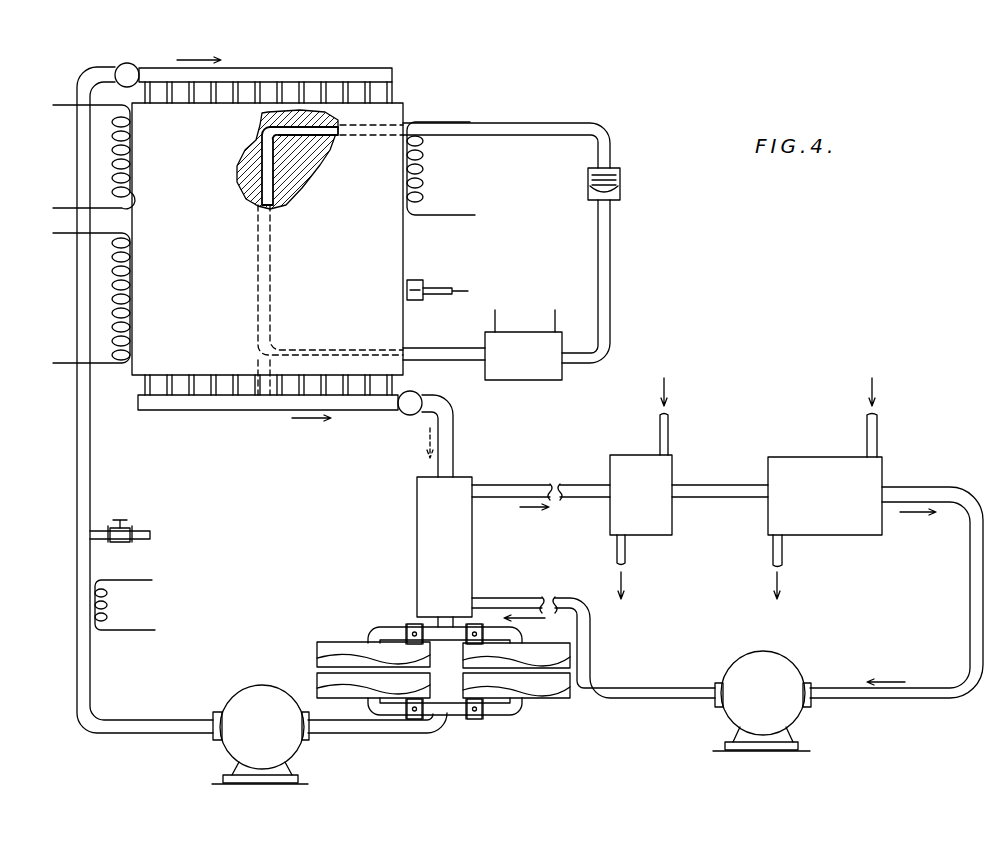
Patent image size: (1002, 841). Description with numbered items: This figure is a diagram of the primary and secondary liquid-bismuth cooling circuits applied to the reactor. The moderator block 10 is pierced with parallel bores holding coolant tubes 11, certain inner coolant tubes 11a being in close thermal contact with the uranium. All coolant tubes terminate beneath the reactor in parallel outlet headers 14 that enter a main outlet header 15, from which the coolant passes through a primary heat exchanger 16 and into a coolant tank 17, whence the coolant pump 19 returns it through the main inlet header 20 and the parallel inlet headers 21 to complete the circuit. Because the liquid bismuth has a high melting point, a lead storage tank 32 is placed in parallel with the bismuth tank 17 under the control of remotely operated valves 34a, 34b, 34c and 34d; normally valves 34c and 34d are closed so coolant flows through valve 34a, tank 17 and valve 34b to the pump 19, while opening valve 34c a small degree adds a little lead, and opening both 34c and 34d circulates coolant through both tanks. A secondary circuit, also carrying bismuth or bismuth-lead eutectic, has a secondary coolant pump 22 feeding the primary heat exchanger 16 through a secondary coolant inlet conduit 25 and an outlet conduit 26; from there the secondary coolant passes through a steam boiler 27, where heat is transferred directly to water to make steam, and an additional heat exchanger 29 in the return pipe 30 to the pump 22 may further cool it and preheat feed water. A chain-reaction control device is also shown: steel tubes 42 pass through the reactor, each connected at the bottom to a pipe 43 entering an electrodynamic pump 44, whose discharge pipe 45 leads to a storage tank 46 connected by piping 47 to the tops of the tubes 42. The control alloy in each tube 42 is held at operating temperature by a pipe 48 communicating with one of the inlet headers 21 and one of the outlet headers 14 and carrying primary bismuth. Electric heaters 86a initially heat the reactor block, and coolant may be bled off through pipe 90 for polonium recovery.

The moderator block 10 is at (208, 270).
The coolant tubes 11 is at (397, 97).
The inner coolant tubes 11a is at (233, 396).
The outlet headers 14 is at (278, 410).
The main outlet header 15 is at (405, 413).
The primary heat exchanger 16 is at (417, 545).
The coolant tank 17 is at (552, 690).
The coolant pump 19 is at (240, 705).
The main inlet header 20 is at (130, 64).
The inlet headers 21 is at (282, 68).
The secondary coolant pump 22 is at (790, 672).
The secondary coolant inlet conduit 25 is at (499, 598).
The secondary coolant outlet conduit 26 is at (505, 479).
The steam boiler 27 is at (658, 472).
The additional heat exchanger 29 is at (808, 465).
The return pipe 30 is at (975, 621).
The lead storage tank 32 is at (317, 657).
The remotely operated valve 34a is at (472, 625).
The remotely operated valve 34b is at (476, 720).
The remotely operated valve 34c is at (414, 720).
The remotely operated valve 34d is at (407, 628).
The steel tubes 42 is at (276, 241).
The pipe 43 is at (448, 348).
The electrodynamic pump 44 is at (525, 335).
The pipe 45 is at (612, 286).
The storage tank 46 is at (622, 179).
The piping 47 is at (600, 122).
The pipe 48 is at (252, 123).
The electric heaters 86a is at (112, 158).
The pipe 90 is at (132, 530).